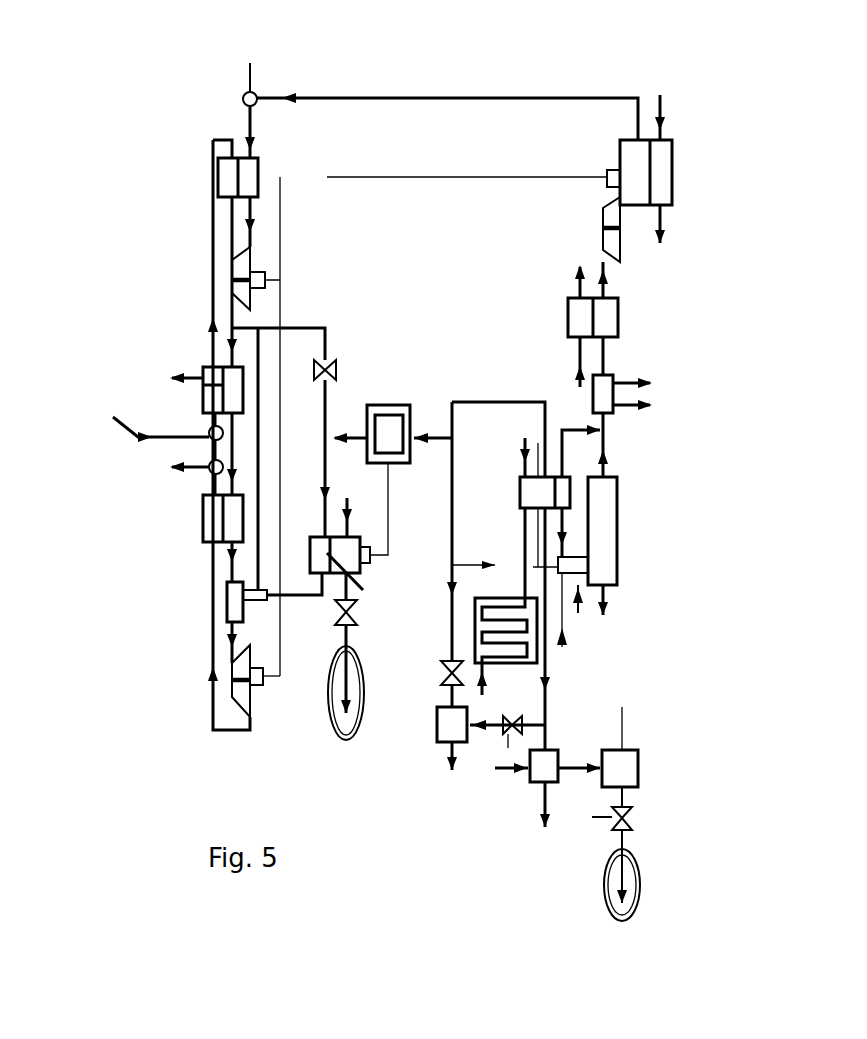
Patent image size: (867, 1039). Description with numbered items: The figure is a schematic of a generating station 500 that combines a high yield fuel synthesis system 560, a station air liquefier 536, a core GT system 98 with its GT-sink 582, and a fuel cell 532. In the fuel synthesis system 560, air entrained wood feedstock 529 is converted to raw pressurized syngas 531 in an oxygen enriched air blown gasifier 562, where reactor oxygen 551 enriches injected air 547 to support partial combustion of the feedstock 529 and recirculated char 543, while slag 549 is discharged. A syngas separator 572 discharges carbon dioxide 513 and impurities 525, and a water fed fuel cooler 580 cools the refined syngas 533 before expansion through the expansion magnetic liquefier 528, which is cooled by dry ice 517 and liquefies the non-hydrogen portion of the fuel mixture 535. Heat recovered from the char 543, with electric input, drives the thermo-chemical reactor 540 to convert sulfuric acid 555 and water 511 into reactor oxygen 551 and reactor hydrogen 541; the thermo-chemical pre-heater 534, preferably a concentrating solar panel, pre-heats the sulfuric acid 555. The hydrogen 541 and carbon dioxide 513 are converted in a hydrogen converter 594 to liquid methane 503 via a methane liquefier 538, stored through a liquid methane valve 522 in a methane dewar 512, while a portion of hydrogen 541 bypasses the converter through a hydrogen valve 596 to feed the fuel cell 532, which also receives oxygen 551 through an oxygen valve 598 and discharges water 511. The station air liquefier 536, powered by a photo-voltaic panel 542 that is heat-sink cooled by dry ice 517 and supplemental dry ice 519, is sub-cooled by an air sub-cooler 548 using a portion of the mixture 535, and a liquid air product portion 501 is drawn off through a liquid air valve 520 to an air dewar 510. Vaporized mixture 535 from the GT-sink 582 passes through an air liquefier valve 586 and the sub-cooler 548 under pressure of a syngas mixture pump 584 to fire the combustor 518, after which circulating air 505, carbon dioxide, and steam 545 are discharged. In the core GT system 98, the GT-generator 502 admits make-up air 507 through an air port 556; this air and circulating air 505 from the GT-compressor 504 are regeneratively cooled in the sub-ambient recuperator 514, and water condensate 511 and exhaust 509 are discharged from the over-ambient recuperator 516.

The generating station 500 is at (465, 48).
The syngas mixture pump 584 is at (242, 96).
The fuel mixture 535 is at (288, 101).
The GT-sink 582 is at (248, 177).
The circulating air 505 is at (225, 340).
The GT-compressor 504 is at (250, 298).
The air liquefier valve 586 is at (328, 360).
The carbon dioxide 513 is at (333, 436).
The dry ice 517 is at (185, 372).
The supplemental dry ice 519 is at (496, 531).
The sub-ambient recuperator 514 is at (207, 397).
The make-up air 507 is at (400, 493).
The air port 556 is at (207, 430).
The core GT system 98 is at (205, 478).
The exhaust 509 is at (170, 465).
The over-ambient recuperator 516 is at (213, 530).
The combustor 518 is at (230, 597).
The steam 545 is at (232, 642).
The GT-generator 502 is at (237, 687).
The liquid air valve 520 is at (335, 612).
The liquid air product portion 501 is at (342, 715).
The air dewar 510 is at (342, 740).
The air sub-cooler 548 is at (364, 579).
The photo-voltaic panel 542 is at (383, 422).
The station air liquefier 536 is at (348, 543).
The reactor oxygen 551 is at (482, 567).
The thermo-chemical pre-heater 534 is at (480, 643).
The sulfuric acid 555 is at (487, 683).
The oxygen valve 598 is at (442, 678).
The fuel cell 532 is at (440, 730).
The hydrogen valve 596 is at (523, 722).
The reactor hydrogen 541 is at (552, 672).
The hydrogen converter 594 is at (548, 758).
The water 511 is at (578, 284).
The methane liquefier 538 is at (627, 767).
The liquid methane valve 522 is at (628, 818).
The liquid methane 503 is at (630, 892).
The methane dewar 512 is at (603, 898).
The expansion magnetic liquefier 528 is at (625, 162).
The refined syngas 533 is at (607, 275).
The water fed fuel cooler 580 is at (592, 322).
The syngas separator 572 is at (603, 403).
The impurities 525 is at (643, 397).
The raw pressurized syngas 531 is at (608, 457).
The recirculated char 543 is at (592, 430).
The thermo-chemical reactor 540 is at (528, 495).
The fuel synthesis system 560 is at (538, 523).
The oxygen enriched air blown gasifier 562 is at (612, 548).
The slag 549 is at (612, 603).
The injected air 547 is at (582, 607).
The air entrained wood feedstock 529 is at (562, 610).